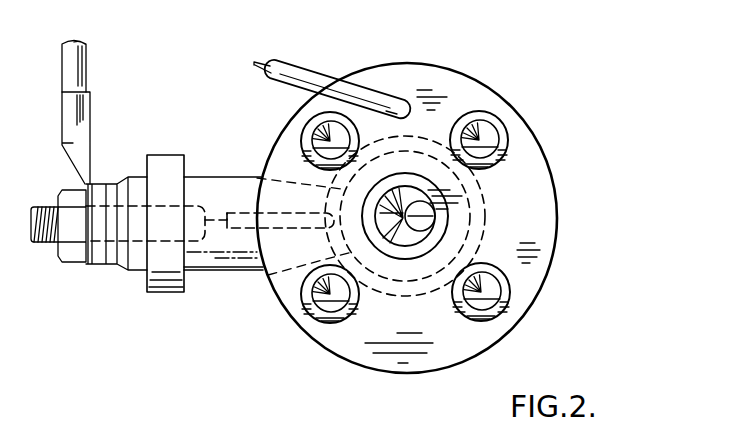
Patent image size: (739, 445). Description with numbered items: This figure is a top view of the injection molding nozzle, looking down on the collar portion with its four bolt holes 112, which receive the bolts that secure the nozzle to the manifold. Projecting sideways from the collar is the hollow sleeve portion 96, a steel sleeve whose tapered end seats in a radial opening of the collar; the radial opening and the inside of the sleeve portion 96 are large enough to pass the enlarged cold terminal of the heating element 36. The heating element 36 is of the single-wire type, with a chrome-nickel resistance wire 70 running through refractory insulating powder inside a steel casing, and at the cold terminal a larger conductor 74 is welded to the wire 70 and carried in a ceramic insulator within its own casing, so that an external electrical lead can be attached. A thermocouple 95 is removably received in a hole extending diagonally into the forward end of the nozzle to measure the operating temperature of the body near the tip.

The heating element 36 is at (287, 229).
The chrome-nickel resistance wire 70 is at (215, 227).
The larger conductor 74 is at (198, 270).
The thermocouple 95 is at (367, 95).
The hollow sleeve portion 96 is at (165, 162).
The bolt holes 112 is at (492, 288).